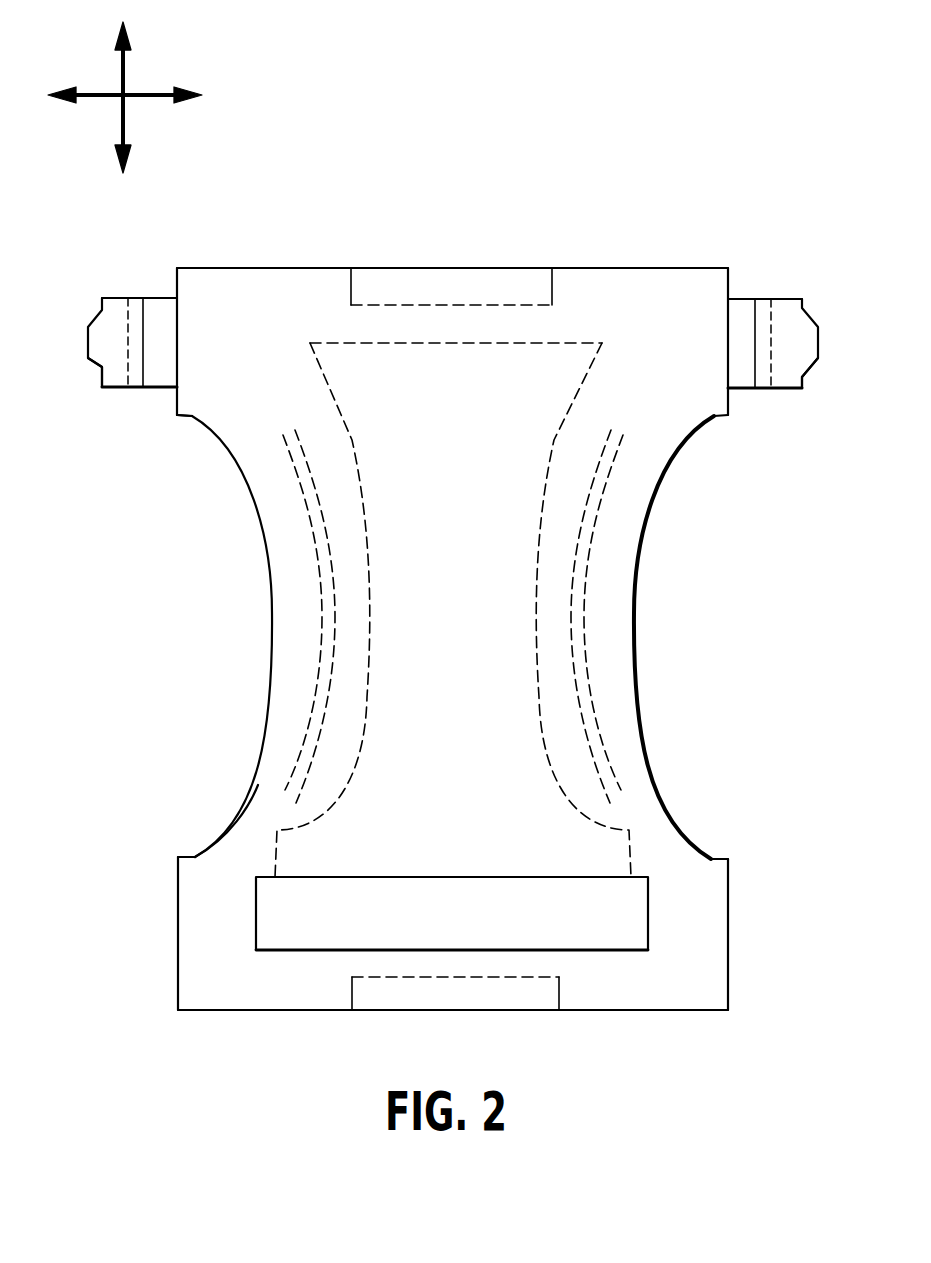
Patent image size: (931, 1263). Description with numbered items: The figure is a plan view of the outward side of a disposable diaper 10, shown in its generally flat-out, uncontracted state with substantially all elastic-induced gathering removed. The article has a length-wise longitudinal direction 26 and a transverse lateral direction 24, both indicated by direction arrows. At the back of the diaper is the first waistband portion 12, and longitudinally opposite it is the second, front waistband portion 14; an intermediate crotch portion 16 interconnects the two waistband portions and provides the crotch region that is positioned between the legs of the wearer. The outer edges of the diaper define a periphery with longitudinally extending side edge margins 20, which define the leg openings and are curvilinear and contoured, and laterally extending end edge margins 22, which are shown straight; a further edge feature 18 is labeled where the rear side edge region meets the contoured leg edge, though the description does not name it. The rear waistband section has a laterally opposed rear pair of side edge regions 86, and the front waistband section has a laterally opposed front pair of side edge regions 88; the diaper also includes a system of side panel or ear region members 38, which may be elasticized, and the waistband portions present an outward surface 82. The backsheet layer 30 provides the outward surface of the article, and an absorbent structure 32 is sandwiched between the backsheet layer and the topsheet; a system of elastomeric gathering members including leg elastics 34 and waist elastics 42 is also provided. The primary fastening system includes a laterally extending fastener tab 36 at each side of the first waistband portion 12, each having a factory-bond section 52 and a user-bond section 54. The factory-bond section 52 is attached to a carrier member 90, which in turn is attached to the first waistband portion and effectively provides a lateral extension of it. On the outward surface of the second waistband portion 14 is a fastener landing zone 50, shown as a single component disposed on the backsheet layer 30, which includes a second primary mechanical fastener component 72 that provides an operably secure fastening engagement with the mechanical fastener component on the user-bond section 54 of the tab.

The diaper 10 is at (777, 207).
The first waistband portion 12 is at (295, 278).
The second waistband portion 14 is at (328, 1003).
The intermediate crotch portion 16 is at (645, 568).
The second longitudinal side edge 18 is at (202, 430).
The side edge margins 20 is at (280, 708).
The end edge margins 22 is at (607, 285).
The lateral direction 24 is at (147, 98).
The longitudinal direction 26 is at (127, 73).
The backsheet layer 30 is at (258, 798).
The absorbent structure 32 is at (537, 415).
The leg elastics 34 is at (318, 552).
The fastener tab 36 is at (97, 382).
The side panel or ear region members 38 is at (197, 278).
The waist elastics 42 is at (467, 287).
The fastener landing zone 50 is at (652, 933).
The factory-bond section 52 is at (173, 345).
The user-bond section 54 is at (113, 297).
The second primary mechanical fastener component 72 is at (307, 937).
The outward surface 82 is at (673, 283).
The rear pair of side edge regions 86 is at (175, 395).
The front pair of side edge regions 88 is at (178, 887).
The carrier member 90 is at (155, 378).